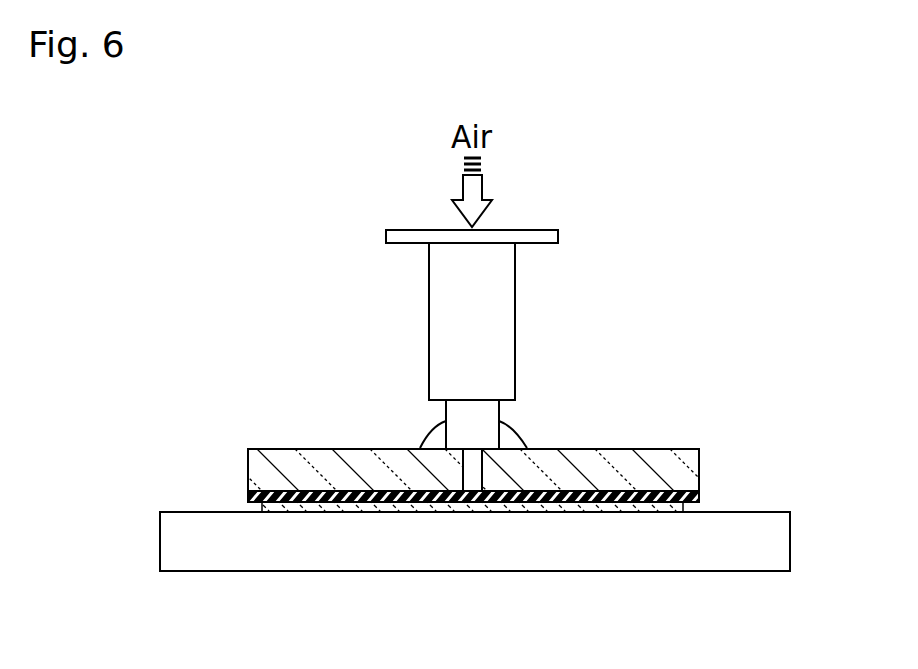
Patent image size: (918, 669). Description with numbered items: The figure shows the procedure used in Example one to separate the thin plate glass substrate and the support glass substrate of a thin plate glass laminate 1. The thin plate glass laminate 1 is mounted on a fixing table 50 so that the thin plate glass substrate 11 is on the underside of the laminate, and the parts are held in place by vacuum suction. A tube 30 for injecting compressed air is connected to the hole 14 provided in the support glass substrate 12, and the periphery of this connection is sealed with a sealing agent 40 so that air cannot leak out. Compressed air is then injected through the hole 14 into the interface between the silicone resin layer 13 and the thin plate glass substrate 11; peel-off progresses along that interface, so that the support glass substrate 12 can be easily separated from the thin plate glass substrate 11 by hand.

The thin plate glass laminate 1 is at (271, 422).
The thin plate glass substrate 11 is at (262, 511).
The support glass substrate 12 is at (700, 463).
The silicone resin layer 13 is at (700, 498).
The hole 14 is at (473, 482).
The tube 30 is at (505, 312).
The sealing agent 40 is at (510, 433).
The fixing table 50 is at (778, 542).